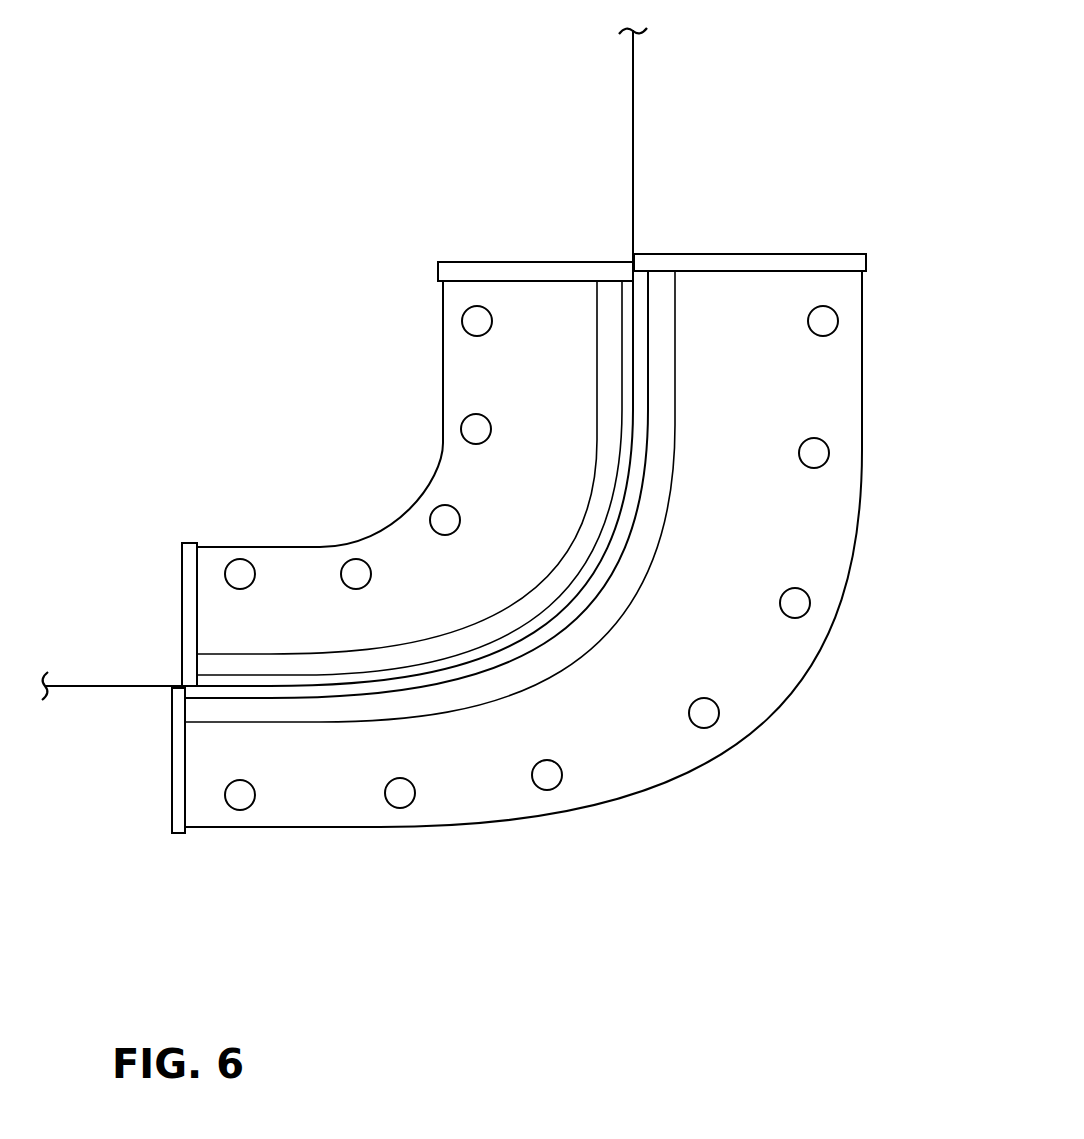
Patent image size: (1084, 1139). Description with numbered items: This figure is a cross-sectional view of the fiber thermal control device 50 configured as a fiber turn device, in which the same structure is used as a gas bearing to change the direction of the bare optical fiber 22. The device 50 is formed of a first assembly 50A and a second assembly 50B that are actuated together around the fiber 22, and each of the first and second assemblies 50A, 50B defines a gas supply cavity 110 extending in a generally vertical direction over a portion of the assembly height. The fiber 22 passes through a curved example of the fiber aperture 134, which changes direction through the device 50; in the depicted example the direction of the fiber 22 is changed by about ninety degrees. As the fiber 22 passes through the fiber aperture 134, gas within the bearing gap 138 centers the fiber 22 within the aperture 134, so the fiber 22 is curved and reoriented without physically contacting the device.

The bare optical fiber 22 is at (633, 113).
The fiber thermal control device 50 is at (325, 251).
The first assembly 50A is at (567, 576).
The second assembly 50B is at (569, 483).
The gas supply cavity 110 is at (612, 293).
The fiber aperture 134 is at (656, 352).
The bearing gap 138 is at (640, 392).